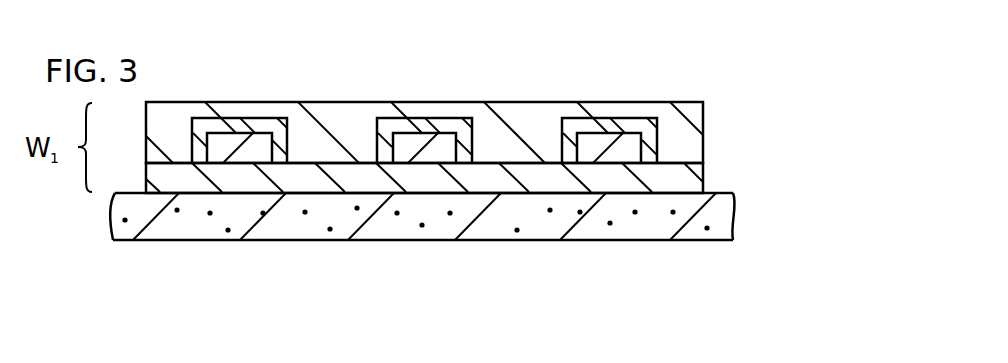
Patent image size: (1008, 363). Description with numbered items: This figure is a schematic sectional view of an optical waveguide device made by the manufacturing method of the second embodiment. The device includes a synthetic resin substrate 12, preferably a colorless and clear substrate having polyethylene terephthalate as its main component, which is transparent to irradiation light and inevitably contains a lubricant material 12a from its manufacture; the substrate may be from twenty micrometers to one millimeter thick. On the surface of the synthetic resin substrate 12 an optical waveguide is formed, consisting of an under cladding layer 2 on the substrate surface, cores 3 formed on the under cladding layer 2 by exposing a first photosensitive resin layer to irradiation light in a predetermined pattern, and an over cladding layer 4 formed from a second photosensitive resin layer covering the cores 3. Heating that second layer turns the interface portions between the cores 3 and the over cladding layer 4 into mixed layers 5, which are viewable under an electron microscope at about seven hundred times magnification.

The under cladding layer 2 is at (685, 178).
The cores 3 is at (414, 149).
The over cladding layer 4 is at (530, 120).
The mixed layers 5 is at (462, 120).
The synthetic resin substrate 12 is at (713, 217).
The lubricant material 12a is at (228, 231).